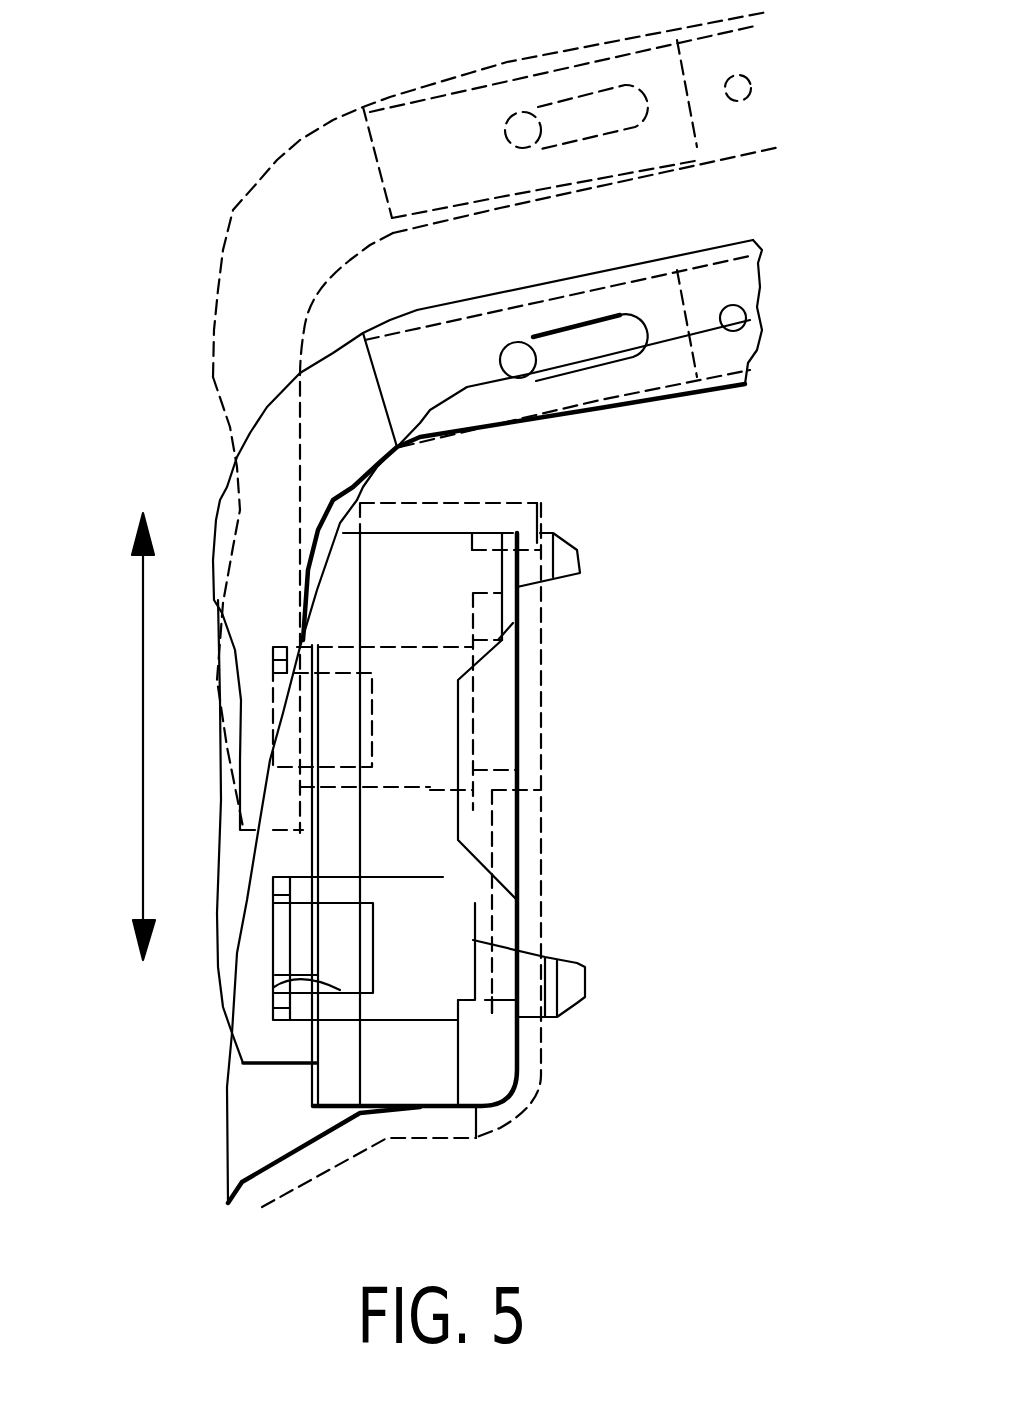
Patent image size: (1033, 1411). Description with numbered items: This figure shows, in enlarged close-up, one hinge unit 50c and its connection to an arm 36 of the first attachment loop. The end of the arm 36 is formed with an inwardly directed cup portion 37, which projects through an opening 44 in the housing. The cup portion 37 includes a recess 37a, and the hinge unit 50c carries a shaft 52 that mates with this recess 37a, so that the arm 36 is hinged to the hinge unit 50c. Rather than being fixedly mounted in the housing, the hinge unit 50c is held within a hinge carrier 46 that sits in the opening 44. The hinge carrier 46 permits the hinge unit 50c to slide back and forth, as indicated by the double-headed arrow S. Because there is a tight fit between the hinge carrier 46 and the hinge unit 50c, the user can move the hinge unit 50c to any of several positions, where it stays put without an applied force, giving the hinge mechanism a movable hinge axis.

The arm 36 is at (240, 202).
The double-headed arrow S is at (141, 710).
The hinge carrier 46 is at (430, 597).
The cup portion 37 is at (443, 877).
The recess 37a is at (275, 987).
The hinge unit 50c is at (447, 731).
The shaft 52 is at (300, 932).
The opening 44 is at (417, 1105).